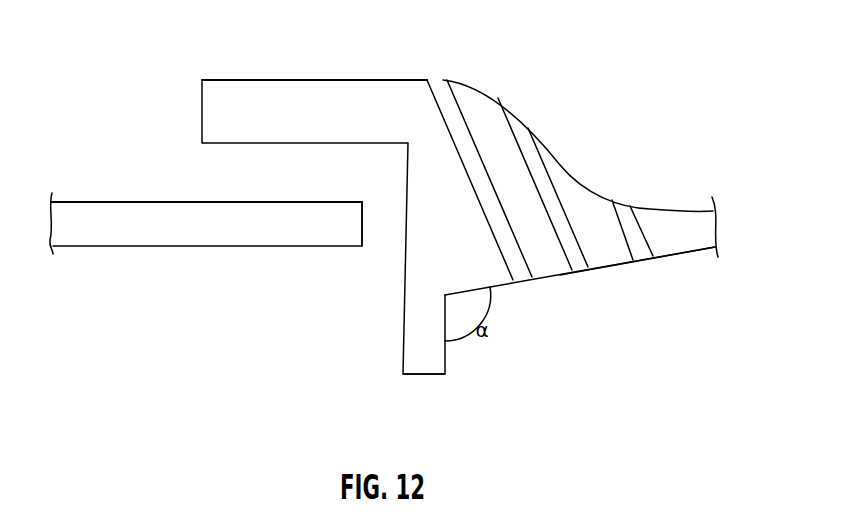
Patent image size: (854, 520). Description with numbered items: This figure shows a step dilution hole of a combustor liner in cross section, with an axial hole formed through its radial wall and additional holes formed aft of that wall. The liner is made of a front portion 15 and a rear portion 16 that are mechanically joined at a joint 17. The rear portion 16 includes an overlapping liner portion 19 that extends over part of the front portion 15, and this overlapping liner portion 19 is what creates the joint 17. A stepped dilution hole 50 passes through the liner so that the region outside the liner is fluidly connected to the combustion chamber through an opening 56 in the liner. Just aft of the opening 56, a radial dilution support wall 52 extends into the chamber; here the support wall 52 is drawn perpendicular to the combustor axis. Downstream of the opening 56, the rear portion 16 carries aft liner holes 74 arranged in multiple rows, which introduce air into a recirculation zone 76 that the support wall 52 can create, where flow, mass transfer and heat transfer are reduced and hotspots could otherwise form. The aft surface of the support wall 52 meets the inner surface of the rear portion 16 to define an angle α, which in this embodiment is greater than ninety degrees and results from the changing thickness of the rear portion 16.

The front portion 15 is at (156, 247).
The rear portion 16 is at (678, 255).
The joint 17 is at (502, 72).
The overlapping liner portion 19 is at (247, 79).
The dilution hole 50 is at (153, 143).
The radial dilution support wall 52 is at (422, 375).
The opening 56 is at (362, 247).
The aft liner holes 74 is at (436, 83).
The recirculation zone 76 is at (571, 382).